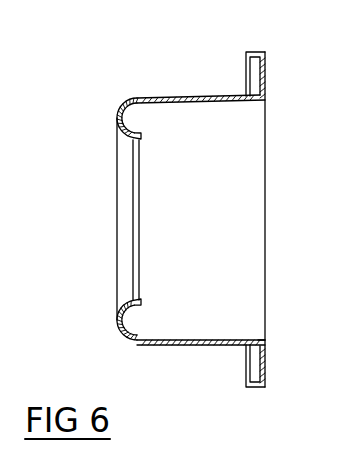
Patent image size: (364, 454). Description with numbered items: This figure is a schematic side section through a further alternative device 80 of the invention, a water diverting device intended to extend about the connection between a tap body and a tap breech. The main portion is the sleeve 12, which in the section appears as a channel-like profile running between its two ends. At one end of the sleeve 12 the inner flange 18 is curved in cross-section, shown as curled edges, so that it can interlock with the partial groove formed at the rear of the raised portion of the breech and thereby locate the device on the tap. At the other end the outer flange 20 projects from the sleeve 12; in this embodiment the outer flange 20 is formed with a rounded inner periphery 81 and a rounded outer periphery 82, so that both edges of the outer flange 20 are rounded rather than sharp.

The alternative device 80 is at (107, 78).
The sleeve 12 is at (199, 348).
The inner flange 18 is at (118, 325).
The outer flange 20 is at (265, 72).
The rounded inner periphery 81 is at (262, 342).
The rounded outer periphery 82 is at (259, 387).